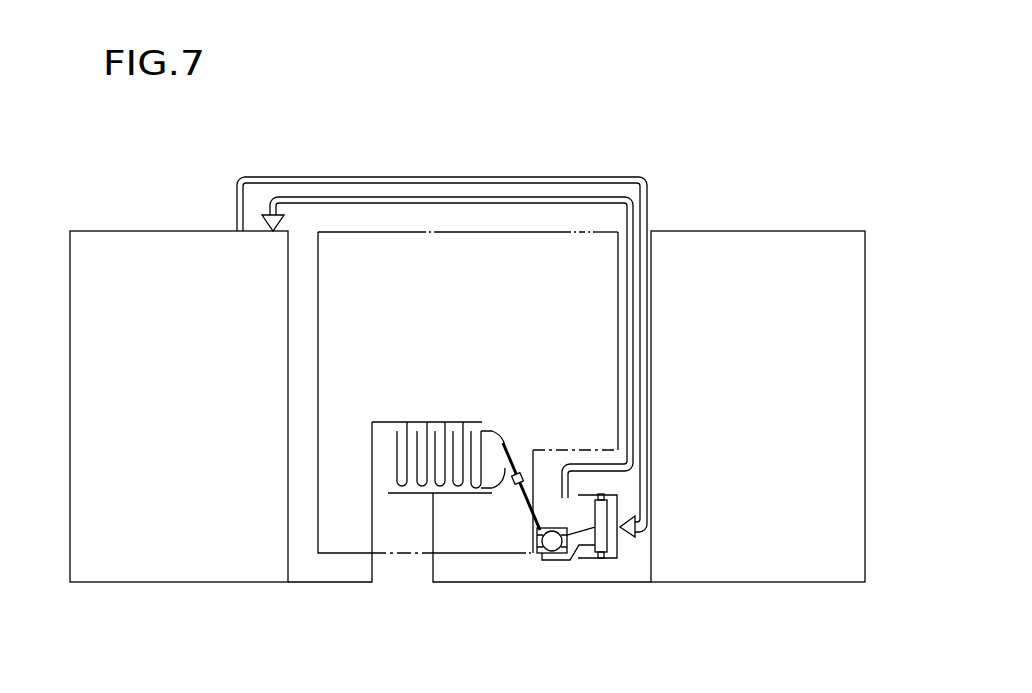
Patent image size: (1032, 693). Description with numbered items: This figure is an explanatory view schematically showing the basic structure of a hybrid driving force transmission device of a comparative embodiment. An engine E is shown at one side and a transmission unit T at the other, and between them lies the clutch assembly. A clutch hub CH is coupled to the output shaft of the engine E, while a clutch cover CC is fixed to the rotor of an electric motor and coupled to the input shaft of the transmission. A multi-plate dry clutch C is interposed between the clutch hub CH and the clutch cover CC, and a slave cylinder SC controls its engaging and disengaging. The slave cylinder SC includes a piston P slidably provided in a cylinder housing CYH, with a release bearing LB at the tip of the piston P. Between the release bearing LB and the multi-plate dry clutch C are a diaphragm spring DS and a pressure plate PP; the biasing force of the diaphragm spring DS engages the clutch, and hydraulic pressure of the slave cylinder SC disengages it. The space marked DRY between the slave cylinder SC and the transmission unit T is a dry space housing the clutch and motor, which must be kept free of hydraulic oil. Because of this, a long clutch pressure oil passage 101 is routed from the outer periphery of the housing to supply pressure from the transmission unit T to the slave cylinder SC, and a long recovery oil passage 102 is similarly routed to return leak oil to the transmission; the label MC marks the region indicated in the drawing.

The clutch pressure oil passage 101 is at (562, 177).
The recovery oil passage 102 is at (361, 197).
The main chamber MC is at (413, 222).
The transmission unit T is at (179, 406).
The engine E is at (758, 406).
The drying chamber DRY is at (468, 392).
The multi-plate dry clutch C is at (383, 441).
The pressure plate PP is at (490, 436).
The diaphragm spring DS is at (511, 448).
The release bearing LB is at (548, 528).
The cylinder housing CYH is at (619, 503).
The piston P is at (607, 541).
The clutch cover CC is at (339, 592).
The clutch hub CH is at (499, 592).
The slave cylinder SC is at (614, 582).